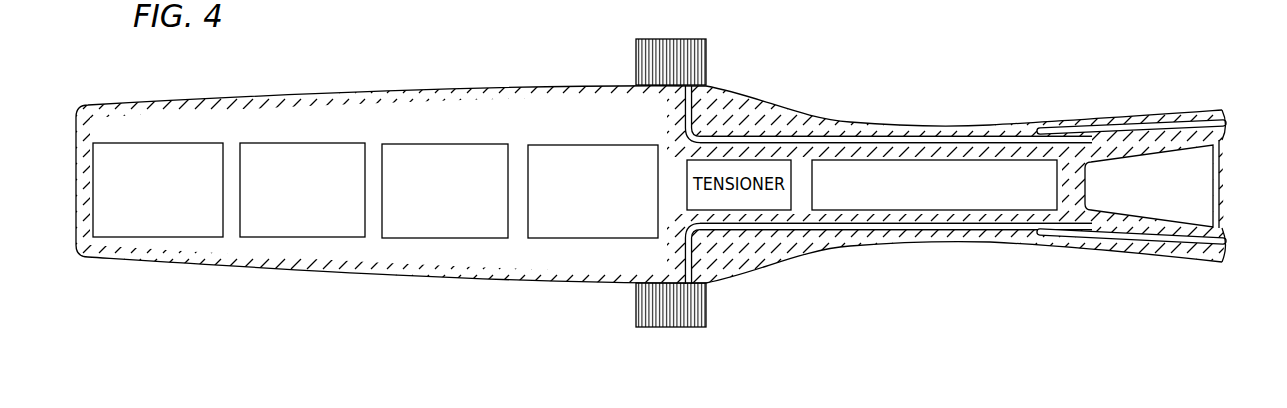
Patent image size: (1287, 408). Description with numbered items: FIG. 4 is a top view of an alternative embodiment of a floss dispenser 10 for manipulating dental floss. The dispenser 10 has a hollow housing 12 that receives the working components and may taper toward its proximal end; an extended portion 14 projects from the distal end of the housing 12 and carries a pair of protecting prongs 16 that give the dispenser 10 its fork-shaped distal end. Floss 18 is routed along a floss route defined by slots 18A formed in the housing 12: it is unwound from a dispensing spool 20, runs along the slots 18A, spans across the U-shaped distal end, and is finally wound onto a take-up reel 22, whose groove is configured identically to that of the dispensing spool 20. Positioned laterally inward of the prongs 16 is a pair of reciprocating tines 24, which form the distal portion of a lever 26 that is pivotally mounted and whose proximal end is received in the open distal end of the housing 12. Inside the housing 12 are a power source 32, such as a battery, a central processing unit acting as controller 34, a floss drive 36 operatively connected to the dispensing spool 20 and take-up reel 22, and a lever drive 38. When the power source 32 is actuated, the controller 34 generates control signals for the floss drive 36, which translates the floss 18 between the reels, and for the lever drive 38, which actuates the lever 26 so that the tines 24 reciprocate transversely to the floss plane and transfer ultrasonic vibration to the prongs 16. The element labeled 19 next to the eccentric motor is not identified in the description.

The floss dispenser 10 is at (166, 62).
The housing 12 is at (238, 273).
The extended portion 14 is at (994, 252).
The protecting prongs 16 is at (1185, 110).
The floss 18 is at (1271, 198).
The slots (guide grooves / floss route) 18A is at (823, 140).
The eccentric motor mount 19 is at (982, 160).
The dispensing spool 20 is at (695, 110).
The take-up reel 22 is at (695, 257).
The reciprocating tines 24 is at (1117, 125).
The lever 26 is at (920, 126).
The power source 32 is at (162, 237).
The central processing unit (controller) 34 is at (305, 143).
The floss drive 36 is at (597, 145).
The lever drive 38 is at (435, 144).